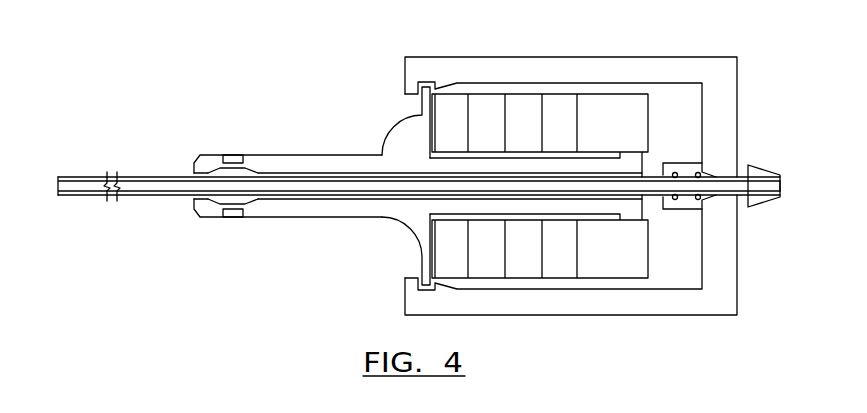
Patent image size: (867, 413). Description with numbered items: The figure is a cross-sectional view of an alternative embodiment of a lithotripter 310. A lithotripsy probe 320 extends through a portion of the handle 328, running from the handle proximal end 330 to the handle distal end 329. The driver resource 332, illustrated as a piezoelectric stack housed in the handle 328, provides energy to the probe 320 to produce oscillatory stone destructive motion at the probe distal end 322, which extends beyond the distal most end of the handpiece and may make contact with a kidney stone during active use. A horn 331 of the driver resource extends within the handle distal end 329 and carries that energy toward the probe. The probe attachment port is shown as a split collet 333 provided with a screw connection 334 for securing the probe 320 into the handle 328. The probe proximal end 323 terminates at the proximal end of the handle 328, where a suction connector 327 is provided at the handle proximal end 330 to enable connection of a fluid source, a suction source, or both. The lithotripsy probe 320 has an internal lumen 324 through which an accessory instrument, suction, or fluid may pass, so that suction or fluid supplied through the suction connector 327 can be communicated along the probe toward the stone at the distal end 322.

The lithotripter 310 is at (289, 83).
The lithotripsy probe 320 is at (133, 198).
The probe distal end 322 is at (60, 177).
The probe proximal end 323 is at (782, 191).
The internal lumen 324 is at (240, 201).
The suction connector 327 is at (767, 168).
The handle 328 is at (622, 316).
The handle distal end 329 is at (200, 217).
The handle proximal end 330 is at (738, 63).
The horn 331 is at (395, 151).
The driver resource 332 is at (558, 117).
The split collet 333 is at (232, 164).
The screw connection 334 is at (232, 210).